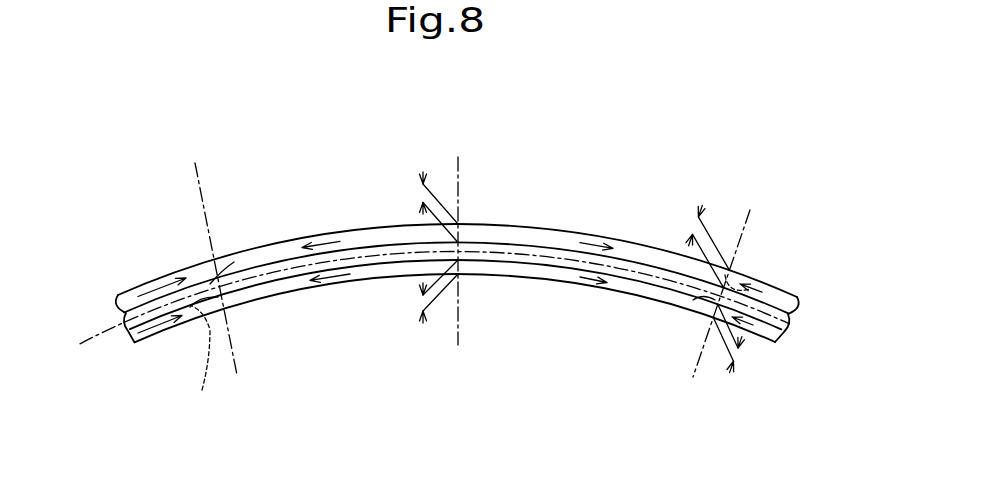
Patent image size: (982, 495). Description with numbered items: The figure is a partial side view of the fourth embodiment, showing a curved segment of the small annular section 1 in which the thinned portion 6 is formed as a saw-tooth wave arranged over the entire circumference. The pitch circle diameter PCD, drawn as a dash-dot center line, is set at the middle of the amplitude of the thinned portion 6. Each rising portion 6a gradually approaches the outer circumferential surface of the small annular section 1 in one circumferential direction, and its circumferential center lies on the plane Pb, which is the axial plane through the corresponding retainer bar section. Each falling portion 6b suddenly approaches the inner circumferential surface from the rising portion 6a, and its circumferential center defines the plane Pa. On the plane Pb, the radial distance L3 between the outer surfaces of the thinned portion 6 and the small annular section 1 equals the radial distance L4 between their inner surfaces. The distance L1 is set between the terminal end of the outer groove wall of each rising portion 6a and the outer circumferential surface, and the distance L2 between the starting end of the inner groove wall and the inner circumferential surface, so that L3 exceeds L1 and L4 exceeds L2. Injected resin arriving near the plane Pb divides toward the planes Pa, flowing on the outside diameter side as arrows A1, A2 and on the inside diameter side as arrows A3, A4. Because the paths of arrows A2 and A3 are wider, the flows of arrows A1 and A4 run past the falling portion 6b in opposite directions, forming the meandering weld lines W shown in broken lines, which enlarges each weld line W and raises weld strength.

The small annular section 1 is at (611, 174).
The thinned portion 6 is at (495, 272).
The rising portion 6a is at (530, 250).
The falling portion 6b is at (699, 300).
The pitch circle diameter PCD is at (768, 310).
The plane Pa is at (192, 222).
The plane Pb is at (462, 175).
The radial distance L1 is at (693, 219).
The radial distance L2 is at (736, 355).
The radial distance L3 is at (422, 197).
The radial distance L4 is at (423, 306).
The weld line W is at (690, 295).
The arrow A1 is at (375, 251).
The arrow A2 is at (549, 248).
The arrow A3 is at (372, 320).
The arrow A4 is at (554, 319).